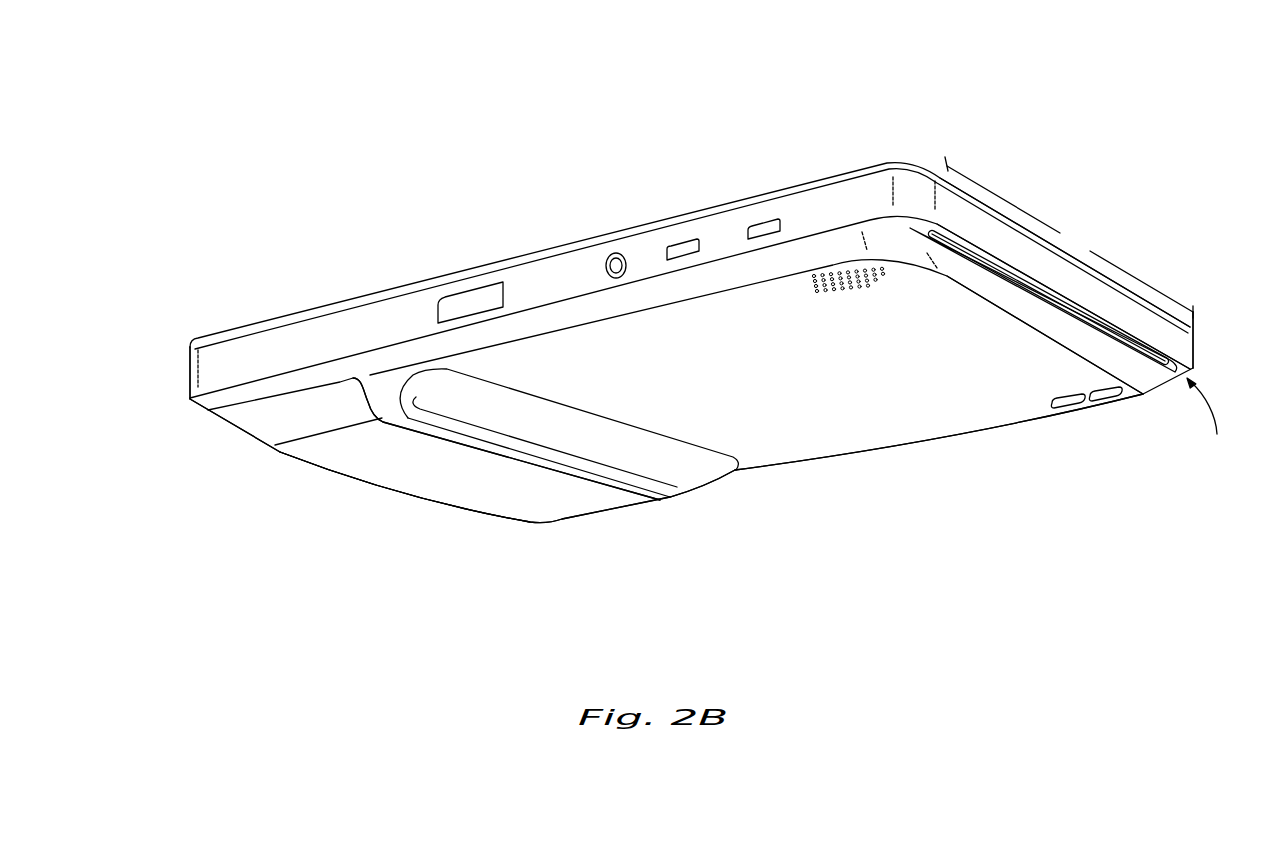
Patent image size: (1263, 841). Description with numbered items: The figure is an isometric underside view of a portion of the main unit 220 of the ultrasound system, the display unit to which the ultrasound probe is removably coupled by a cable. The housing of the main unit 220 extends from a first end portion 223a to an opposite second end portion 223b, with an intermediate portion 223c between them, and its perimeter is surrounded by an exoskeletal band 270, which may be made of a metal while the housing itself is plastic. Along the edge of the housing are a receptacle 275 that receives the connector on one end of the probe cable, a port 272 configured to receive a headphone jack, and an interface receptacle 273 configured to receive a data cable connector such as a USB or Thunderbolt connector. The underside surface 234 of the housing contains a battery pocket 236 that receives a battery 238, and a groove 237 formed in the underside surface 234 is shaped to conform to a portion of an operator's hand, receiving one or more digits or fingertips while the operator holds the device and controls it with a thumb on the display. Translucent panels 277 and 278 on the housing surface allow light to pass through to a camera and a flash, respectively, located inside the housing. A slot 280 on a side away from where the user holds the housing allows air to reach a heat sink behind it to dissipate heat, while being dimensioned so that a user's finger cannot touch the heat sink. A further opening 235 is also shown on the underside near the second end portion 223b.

The main unit 220 is at (160, 234).
The first end portion 223a is at (200, 433).
The second end portion 223b is at (968, 108).
The intermediate portion 223c is at (500, 212).
The band 270 is at (316, 332).
The port 272 is at (609, 254).
The interface receptacle 273 is at (687, 243).
The receptacle 275 is at (458, 290).
The underside surface 234 is at (612, 345).
The speaker vent 235 is at (831, 270).
The slot 280 is at (893, 162).
The battery pocket 236 is at (505, 535).
The groove 237 is at (613, 442).
The battery 238 is at (397, 490).
The translucent panel 277 is at (1063, 410).
The translucent panel 278 is at (1107, 404).